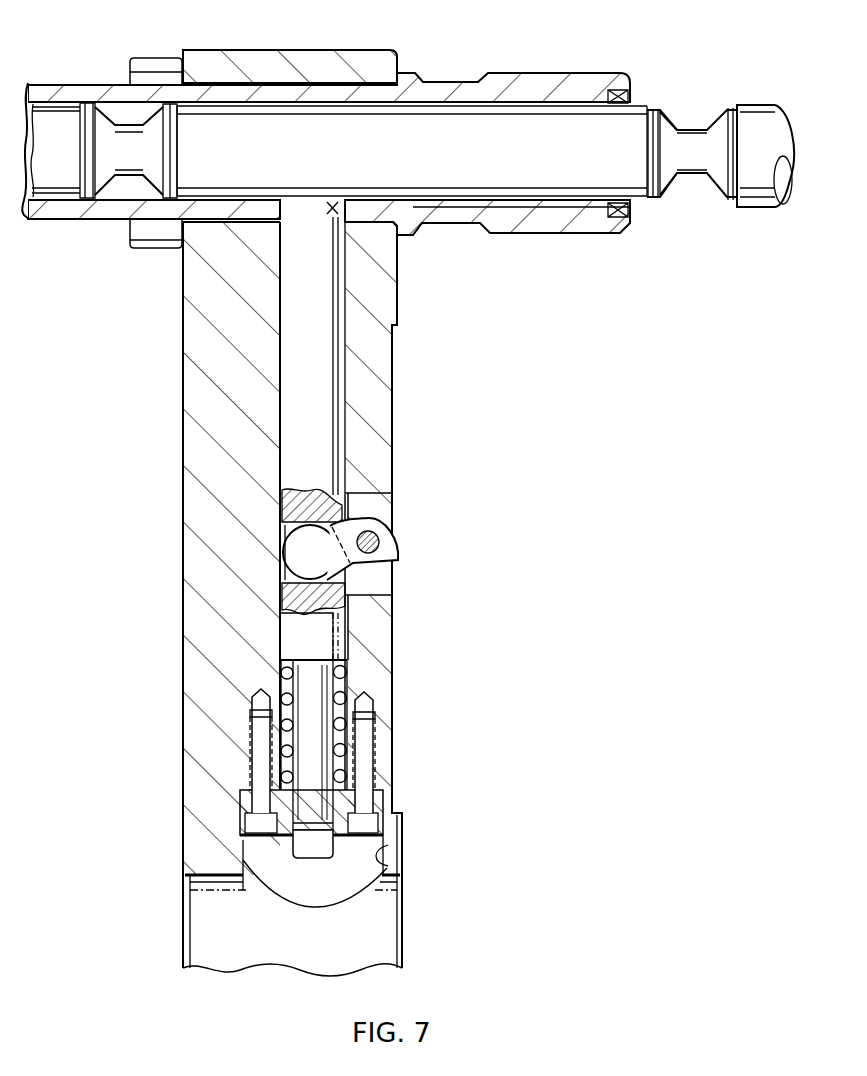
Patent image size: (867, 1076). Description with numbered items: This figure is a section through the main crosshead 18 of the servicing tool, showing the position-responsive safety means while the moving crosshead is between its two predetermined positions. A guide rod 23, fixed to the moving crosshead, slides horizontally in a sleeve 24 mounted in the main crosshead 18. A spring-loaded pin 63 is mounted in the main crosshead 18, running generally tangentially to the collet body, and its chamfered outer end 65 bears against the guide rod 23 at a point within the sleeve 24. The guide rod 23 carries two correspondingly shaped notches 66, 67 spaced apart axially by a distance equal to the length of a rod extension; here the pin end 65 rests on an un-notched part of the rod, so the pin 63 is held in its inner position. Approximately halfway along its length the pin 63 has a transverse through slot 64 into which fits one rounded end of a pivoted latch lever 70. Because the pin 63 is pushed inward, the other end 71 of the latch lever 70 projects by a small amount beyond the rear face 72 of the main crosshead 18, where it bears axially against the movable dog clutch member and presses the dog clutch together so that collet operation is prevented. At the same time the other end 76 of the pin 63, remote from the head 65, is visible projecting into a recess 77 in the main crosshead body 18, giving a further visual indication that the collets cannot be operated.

The main crosshead 18 is at (200, 323).
The guide rod 23 is at (641, 109).
The sleeve 24 is at (88, 85).
The spring-loaded pin 63 is at (280, 408).
The transverse through slot 64 is at (287, 542).
The pin outer end 65 is at (362, 184).
The notch 66 is at (105, 192).
The notch 67 is at (663, 192).
The latch lever 70 is at (290, 575).
The latch lever end 71 is at (400, 547).
The rear face 72 is at (392, 355).
The pin other end 76 is at (253, 862).
The recess 77 is at (390, 862).